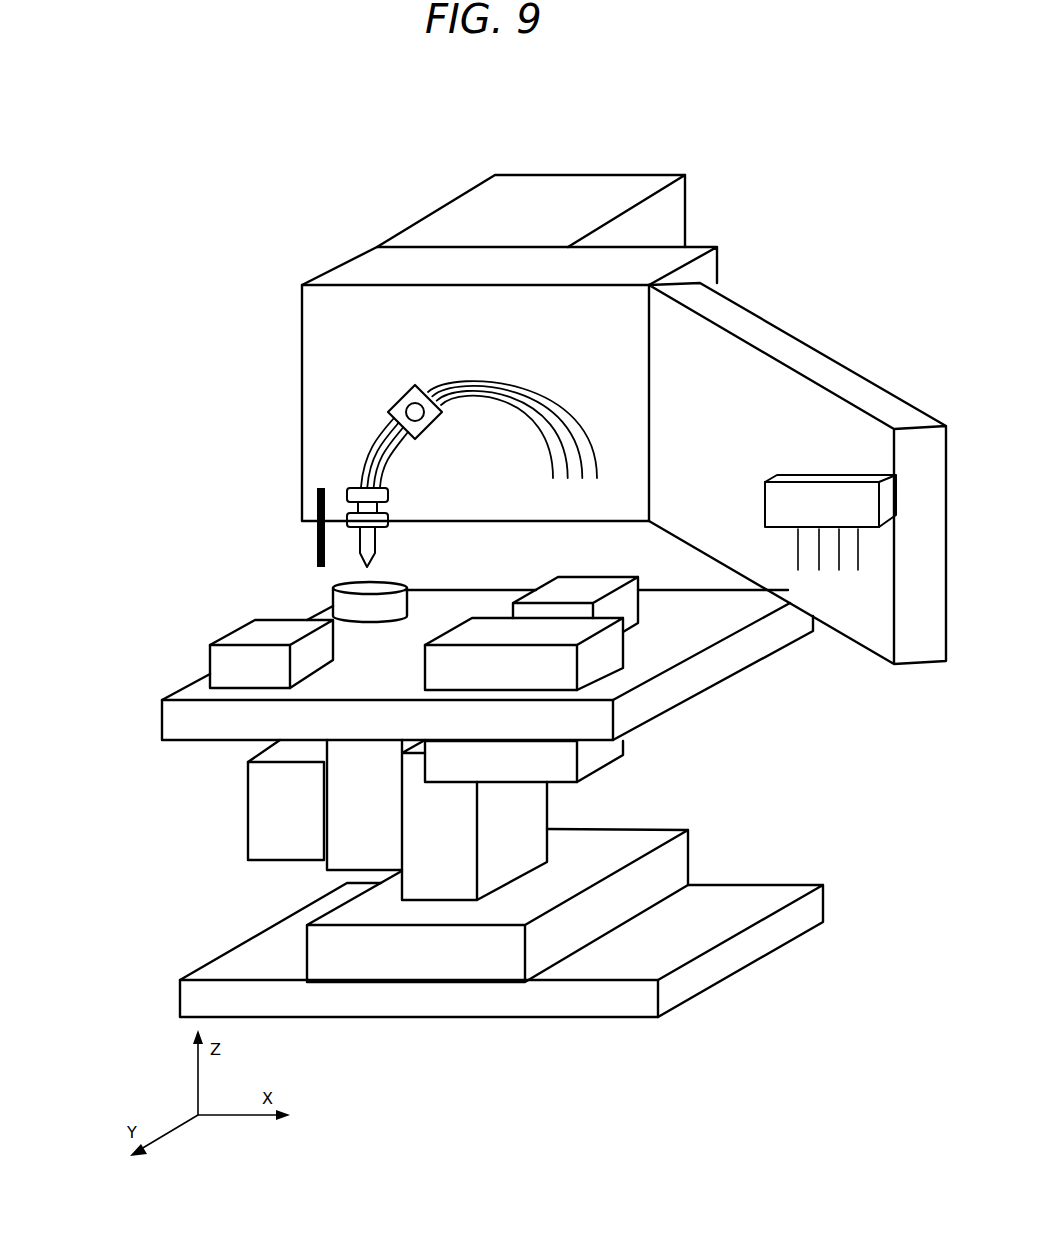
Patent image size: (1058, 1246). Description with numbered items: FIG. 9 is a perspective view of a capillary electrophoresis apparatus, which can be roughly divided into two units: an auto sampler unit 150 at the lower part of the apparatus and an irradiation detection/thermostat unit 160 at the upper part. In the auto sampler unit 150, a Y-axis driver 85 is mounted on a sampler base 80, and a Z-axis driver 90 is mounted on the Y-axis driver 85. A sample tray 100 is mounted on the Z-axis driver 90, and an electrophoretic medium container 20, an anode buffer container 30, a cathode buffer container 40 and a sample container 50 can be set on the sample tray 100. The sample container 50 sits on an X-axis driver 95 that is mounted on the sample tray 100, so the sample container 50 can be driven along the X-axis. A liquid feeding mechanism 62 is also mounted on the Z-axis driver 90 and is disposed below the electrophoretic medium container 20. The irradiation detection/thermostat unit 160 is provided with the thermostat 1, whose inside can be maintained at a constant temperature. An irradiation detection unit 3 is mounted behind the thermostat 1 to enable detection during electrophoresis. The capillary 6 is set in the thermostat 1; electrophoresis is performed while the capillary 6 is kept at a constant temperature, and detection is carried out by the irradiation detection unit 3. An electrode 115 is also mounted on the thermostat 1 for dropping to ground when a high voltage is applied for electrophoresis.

The thermostat 1 is at (360, 265).
The irradiation detection unit 3 is at (473, 207).
The capillary 6 is at (380, 430).
The electrode 115 is at (318, 487).
The electrophoretic medium container 20 is at (342, 603).
The anode buffer container 30 is at (232, 667).
The cathode buffer container 40 is at (630, 607).
The sample container 50 is at (600, 658).
The liquid feeding mechanism 62 is at (263, 790).
The sampler base 80 is at (660, 955).
The Y-axis driver 85 is at (435, 842).
The Z-axis driver 90 is at (355, 852).
The X-axis driver 95 is at (608, 748).
The sample tray 100 is at (202, 728).
The auto sampler unit 150 is at (118, 575).
The irradiation detection/thermostat unit 160 is at (118, 103).